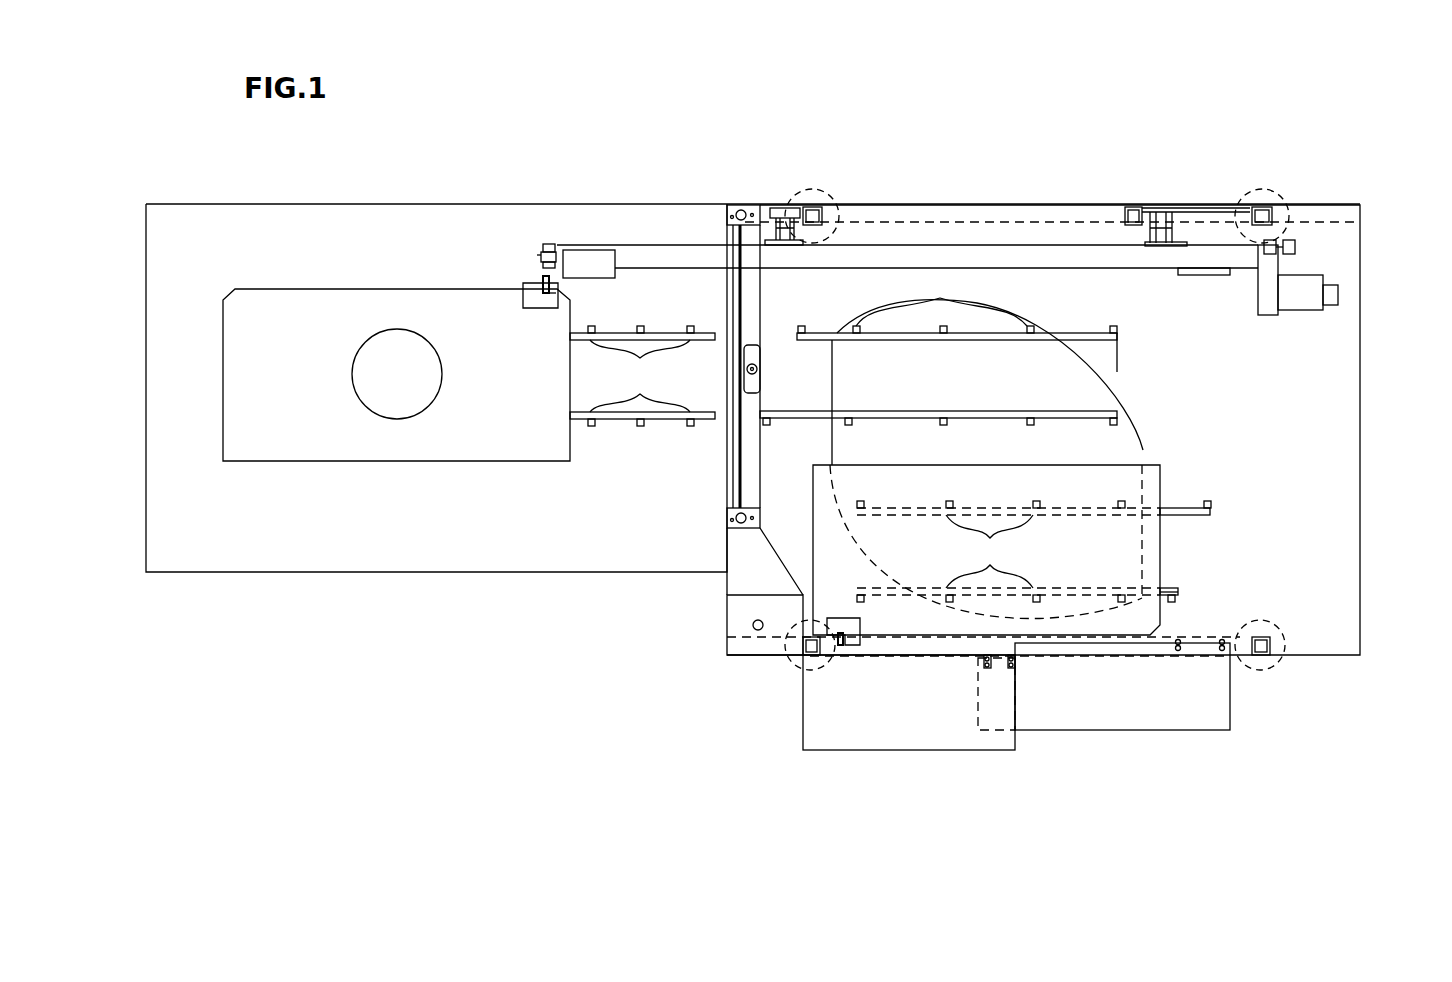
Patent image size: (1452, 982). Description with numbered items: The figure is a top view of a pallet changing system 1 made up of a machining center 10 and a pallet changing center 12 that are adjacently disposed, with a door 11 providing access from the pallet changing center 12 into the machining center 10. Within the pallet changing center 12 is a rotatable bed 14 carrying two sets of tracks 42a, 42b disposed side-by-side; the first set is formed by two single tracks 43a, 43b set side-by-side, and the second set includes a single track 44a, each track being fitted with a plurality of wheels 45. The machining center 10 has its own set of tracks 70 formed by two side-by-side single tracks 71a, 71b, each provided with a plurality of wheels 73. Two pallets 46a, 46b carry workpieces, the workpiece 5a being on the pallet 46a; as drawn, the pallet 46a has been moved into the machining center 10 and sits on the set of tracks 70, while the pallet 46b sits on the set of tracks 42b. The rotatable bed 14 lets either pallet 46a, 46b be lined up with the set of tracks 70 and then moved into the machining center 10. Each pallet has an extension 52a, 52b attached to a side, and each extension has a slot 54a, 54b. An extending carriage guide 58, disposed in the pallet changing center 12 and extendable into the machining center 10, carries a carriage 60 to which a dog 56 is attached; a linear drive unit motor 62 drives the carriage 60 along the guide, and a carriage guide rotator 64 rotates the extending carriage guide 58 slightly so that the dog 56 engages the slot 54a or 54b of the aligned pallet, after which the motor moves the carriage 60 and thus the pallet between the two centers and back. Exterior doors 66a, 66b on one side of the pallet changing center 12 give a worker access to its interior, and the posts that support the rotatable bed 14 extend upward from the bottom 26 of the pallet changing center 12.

The pallet changing system 1 is at (945, 150).
The machining center 10 is at (290, 225).
The door 11 is at (733, 292).
The pallet changing center 12 is at (1322, 360).
The rotatable bed 14 is at (1127, 443).
The bottom 26 is at (1338, 225).
The workpiece 5a is at (397, 374).
The set of tracks 42a is at (1117, 418).
The set of tracks 42b is at (1178, 592).
The single track 43a is at (1035, 420).
The single track 43b is at (1112, 330).
The single track 44a is at (1185, 505).
The wheels 45 is at (944, 428).
The pallet 46a is at (396, 375).
The pallet 46b is at (986, 550).
The extension 52a is at (540, 306).
The extension 52b is at (855, 645).
The slot 54a is at (543, 283).
The slot 54b is at (840, 635).
The dog 56 is at (533, 280).
The extending carriage guide 58 is at (1020, 256).
The carriage 60 is at (593, 262).
The linear drive unit motor 62 is at (1312, 280).
The carriage guide rotator 64 is at (1292, 245).
The door 66a is at (910, 730).
The door 66b is at (1115, 700).
The set of tracks 70 is at (715, 336).
The single track 71a is at (662, 420).
The single track 71b is at (664, 333).
The wheels 73 is at (640, 376).